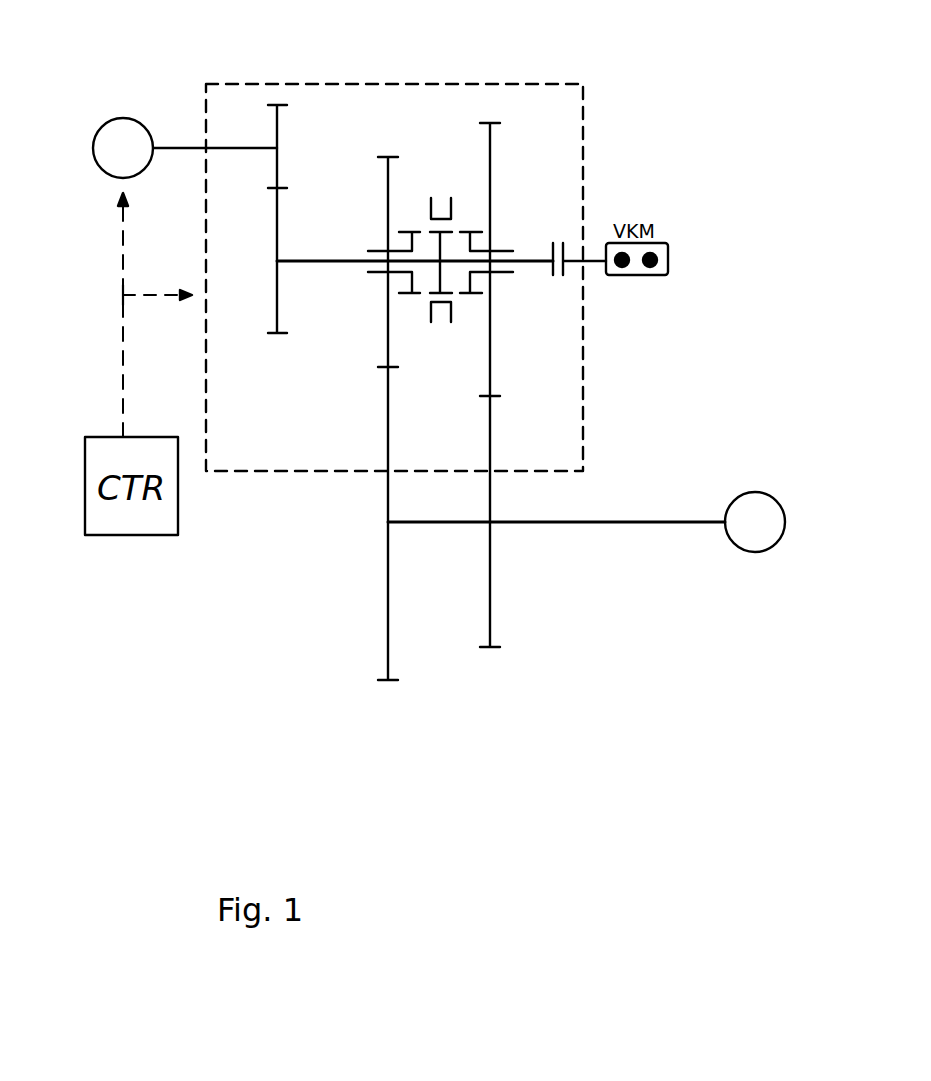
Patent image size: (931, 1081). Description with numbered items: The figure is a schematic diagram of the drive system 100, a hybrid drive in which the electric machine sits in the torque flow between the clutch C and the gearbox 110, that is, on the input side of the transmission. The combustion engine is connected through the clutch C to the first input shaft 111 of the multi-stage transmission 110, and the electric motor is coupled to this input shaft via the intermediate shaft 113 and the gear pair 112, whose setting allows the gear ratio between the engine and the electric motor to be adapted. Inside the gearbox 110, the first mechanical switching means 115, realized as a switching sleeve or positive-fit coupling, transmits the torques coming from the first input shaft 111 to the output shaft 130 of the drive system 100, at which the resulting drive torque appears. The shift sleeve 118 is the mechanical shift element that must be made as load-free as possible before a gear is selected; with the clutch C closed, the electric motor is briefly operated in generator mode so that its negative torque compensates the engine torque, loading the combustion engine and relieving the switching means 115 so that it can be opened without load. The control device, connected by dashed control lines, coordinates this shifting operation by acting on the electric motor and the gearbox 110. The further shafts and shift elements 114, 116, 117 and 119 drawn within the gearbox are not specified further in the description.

The drive system 100 is at (195, 652).
The multi-stage transmission 110 is at (316, 83).
The first input shaft 111 is at (181, 140).
The gear pair 112 is at (273, 338).
The intermediate shaft 113 is at (327, 258).
The output gear shaft 114 is at (388, 685).
The first mechanical switching means 115 is at (440, 214).
The first shifting element 116 is at (404, 230).
The second shifting element 117 is at (474, 230).
The shift sleeve 118 is at (432, 317).
The second gear shaft 119 is at (489, 652).
The output shaft 130 is at (633, 520).
The clutch C is at (553, 238).